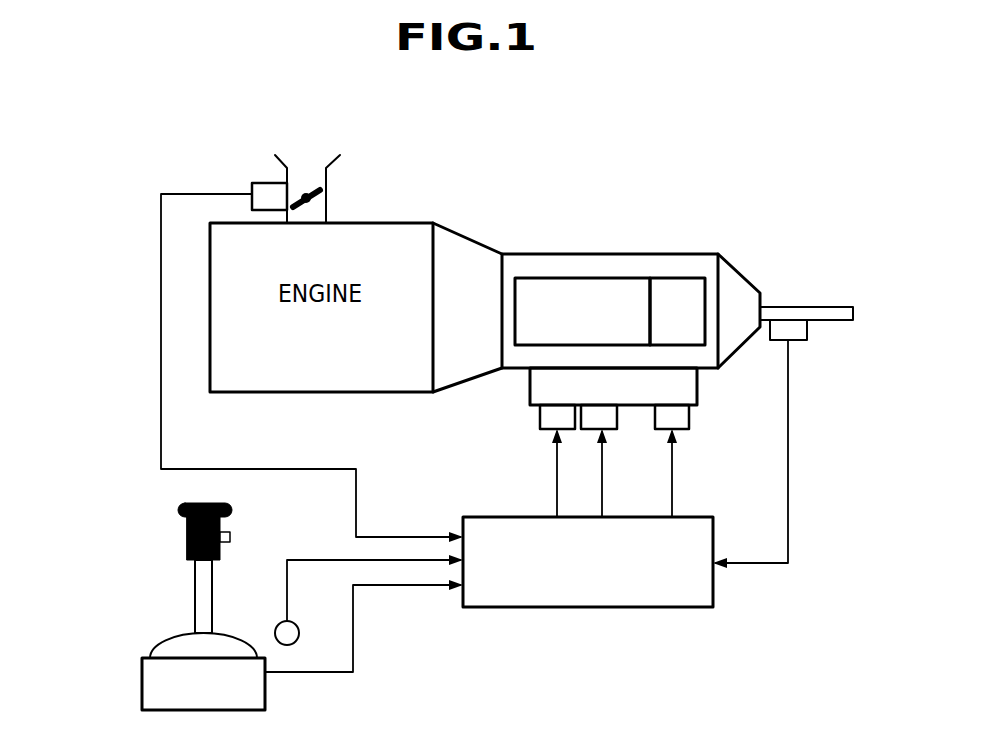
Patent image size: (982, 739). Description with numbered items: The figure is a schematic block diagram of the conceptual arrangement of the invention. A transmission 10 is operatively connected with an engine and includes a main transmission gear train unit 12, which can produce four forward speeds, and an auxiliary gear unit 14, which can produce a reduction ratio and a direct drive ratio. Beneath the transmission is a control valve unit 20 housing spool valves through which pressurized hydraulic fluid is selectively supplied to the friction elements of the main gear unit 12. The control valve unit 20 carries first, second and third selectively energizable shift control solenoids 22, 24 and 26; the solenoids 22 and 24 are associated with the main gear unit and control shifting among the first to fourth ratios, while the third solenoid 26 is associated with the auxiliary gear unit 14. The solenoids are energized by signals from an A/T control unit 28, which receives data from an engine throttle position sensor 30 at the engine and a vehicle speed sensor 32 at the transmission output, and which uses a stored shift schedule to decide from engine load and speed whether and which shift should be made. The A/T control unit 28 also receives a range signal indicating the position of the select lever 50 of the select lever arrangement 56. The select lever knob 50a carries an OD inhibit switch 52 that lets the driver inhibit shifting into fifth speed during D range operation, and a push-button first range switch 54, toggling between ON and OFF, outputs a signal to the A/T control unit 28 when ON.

The transmission 10 is at (637, 254).
The main transmission gear train unit 12 is at (573, 278).
The auxiliary gear unit 14 is at (680, 278).
The control valve unit 20 is at (697, 397).
The first shift control solenoid 22 is at (540, 430).
The second shift control solenoid 24 is at (610, 430).
The third shift control solenoid 26 is at (680, 430).
The A/T control unit 28 is at (648, 607).
The engine throttle position sensor 30 is at (252, 183).
The vehicle speed sensor 32 is at (800, 343).
The select lever 50 is at (195, 588).
The select lever knob 50a is at (178, 515).
The OD inhibit switch 52 is at (230, 537).
The first range switch 54 is at (302, 630).
The select lever arrangement 56 is at (142, 677).